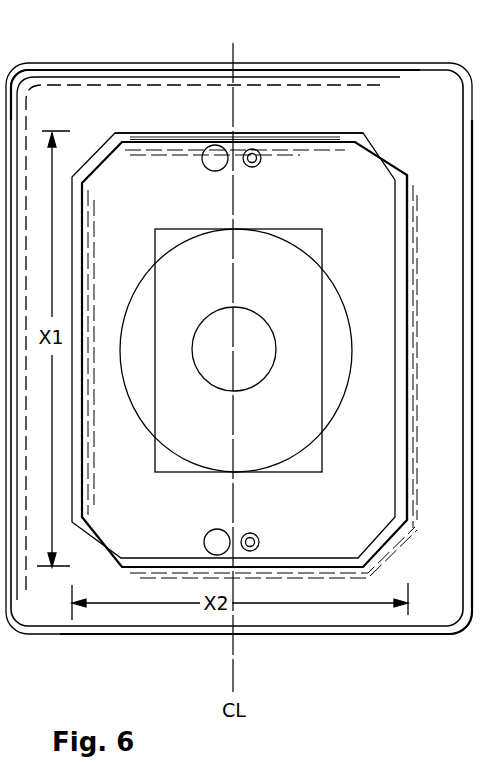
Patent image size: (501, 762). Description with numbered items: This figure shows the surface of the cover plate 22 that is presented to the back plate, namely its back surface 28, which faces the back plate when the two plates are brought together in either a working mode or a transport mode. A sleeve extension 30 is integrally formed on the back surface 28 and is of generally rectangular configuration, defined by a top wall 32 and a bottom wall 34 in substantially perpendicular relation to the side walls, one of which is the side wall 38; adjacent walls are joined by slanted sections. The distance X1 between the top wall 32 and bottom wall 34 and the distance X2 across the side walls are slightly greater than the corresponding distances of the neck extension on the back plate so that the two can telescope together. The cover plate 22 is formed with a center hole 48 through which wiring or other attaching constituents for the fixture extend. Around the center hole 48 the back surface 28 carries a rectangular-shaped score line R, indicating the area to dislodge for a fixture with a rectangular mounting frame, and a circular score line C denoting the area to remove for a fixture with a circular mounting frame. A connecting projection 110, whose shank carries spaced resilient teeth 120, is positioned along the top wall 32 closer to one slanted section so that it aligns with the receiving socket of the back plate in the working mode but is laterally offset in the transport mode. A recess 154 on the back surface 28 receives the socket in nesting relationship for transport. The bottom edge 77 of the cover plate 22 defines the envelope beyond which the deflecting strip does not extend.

The cover plate 22 is at (117, 61).
The sleeve extension 30 is at (339, 122).
The top wall 32 is at (149, 132).
The bottom wall 34 is at (155, 569).
The side wall 38 is at (407, 372).
The back surface 28 is at (352, 462).
The center hole 48 is at (223, 357).
The recess 154 is at (206, 167).
The spaced resilient teeth 120 is at (258, 164).
The connecting projection 110 is at (253, 540).
The bottom edge 77 is at (343, 636).
The rectangular-shaped score line R is at (322, 247).
The circular score line C is at (152, 430).